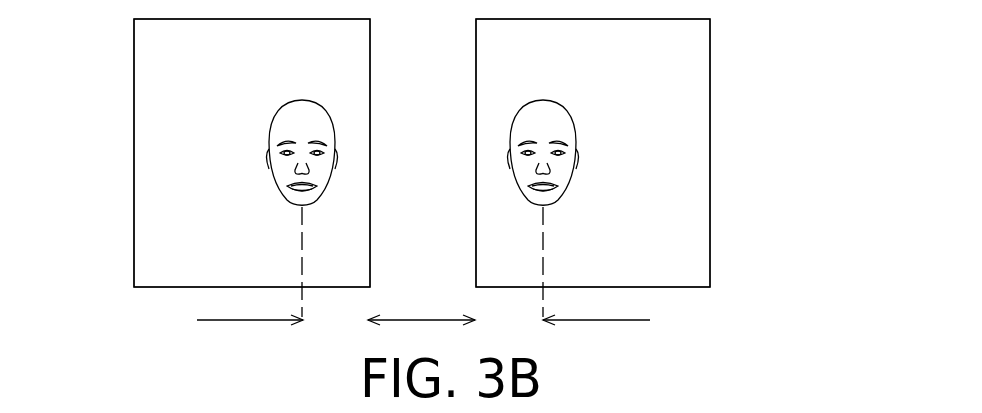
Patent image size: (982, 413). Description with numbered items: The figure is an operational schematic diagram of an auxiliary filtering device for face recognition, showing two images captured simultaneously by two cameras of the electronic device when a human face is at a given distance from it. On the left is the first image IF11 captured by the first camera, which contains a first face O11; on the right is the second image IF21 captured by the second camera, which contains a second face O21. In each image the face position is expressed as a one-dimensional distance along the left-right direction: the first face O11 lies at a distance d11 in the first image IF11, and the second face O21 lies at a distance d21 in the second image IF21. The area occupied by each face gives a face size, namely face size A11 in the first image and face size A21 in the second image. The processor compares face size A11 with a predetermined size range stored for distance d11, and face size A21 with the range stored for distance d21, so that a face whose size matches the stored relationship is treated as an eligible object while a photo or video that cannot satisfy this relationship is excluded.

The first image IF11 is at (134, 160).
The face size A11 is at (252, 153).
The first face O11 is at (334, 138).
The distance d11 is at (274, 330).
The second image IF21 is at (710, 160).
The face size A21 is at (593, 153).
The second face O21 is at (514, 181).
The distance d21 is at (571, 330).